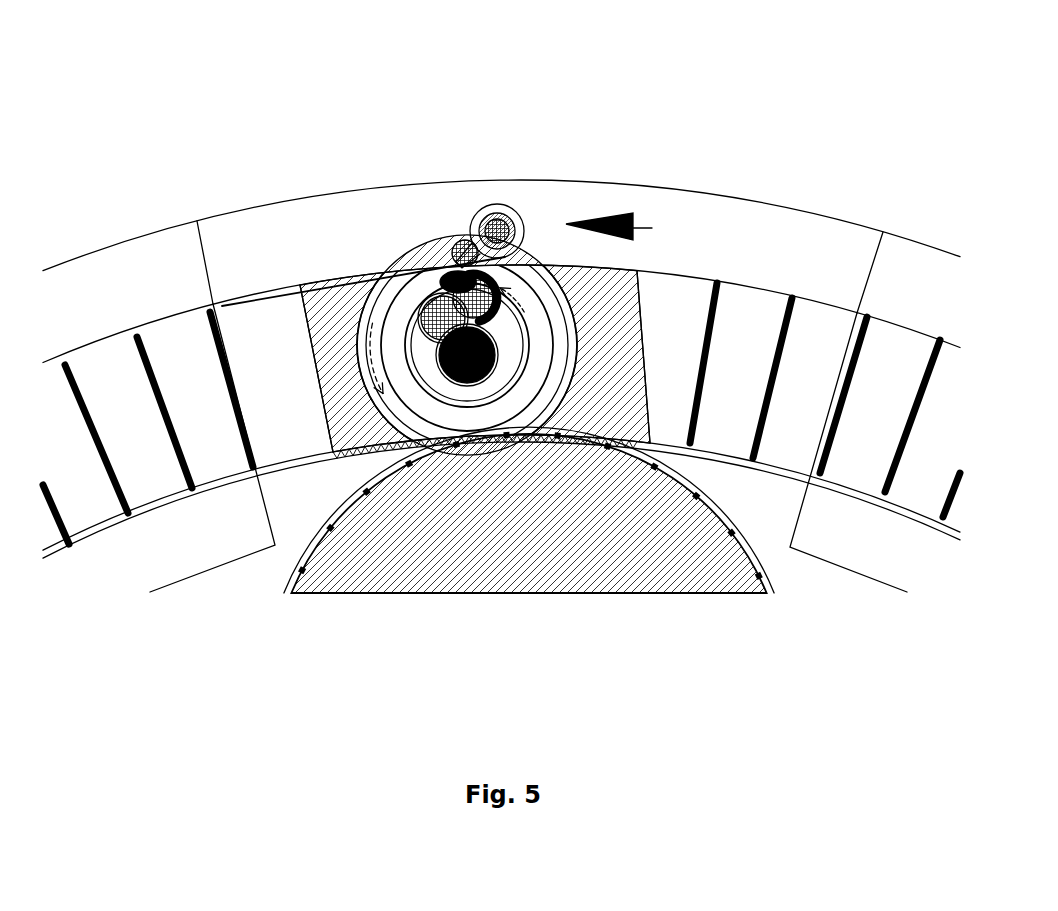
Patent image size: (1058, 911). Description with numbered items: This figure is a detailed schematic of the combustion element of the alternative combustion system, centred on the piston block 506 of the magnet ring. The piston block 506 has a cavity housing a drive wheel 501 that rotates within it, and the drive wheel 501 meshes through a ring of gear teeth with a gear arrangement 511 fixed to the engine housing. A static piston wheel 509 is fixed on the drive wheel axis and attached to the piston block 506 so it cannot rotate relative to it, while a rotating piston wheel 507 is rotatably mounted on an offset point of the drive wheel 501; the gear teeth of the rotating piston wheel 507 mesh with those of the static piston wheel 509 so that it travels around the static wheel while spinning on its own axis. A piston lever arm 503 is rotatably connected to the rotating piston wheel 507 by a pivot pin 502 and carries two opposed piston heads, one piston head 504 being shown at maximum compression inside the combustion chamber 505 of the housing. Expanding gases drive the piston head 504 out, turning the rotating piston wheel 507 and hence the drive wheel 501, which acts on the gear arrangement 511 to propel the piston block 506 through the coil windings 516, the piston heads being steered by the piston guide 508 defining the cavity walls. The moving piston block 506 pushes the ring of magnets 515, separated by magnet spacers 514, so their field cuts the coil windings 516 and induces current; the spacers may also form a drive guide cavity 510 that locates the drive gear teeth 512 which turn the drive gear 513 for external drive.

The drive wheel 501 is at (385, 290).
The pivot pin 502 is at (454, 250).
The piston lever arm 503 is at (461, 218).
The piston head 504 is at (499, 203).
The combustion chamber 505 is at (532, 203).
The piston block 506 is at (631, 256).
The rotating piston wheel 507 is at (505, 257).
The piston guide 508 is at (568, 303).
The static piston wheel 509 is at (498, 353).
The drive guide cavity 510 is at (270, 434).
The gear arrangement 511 is at (339, 430).
The drive gear teeth 512 is at (362, 458).
The drive gear 513 is at (398, 512).
The magnet spacer 514 is at (771, 414).
The magnets 515 is at (869, 408).
The coil windings 516 is at (122, 262).